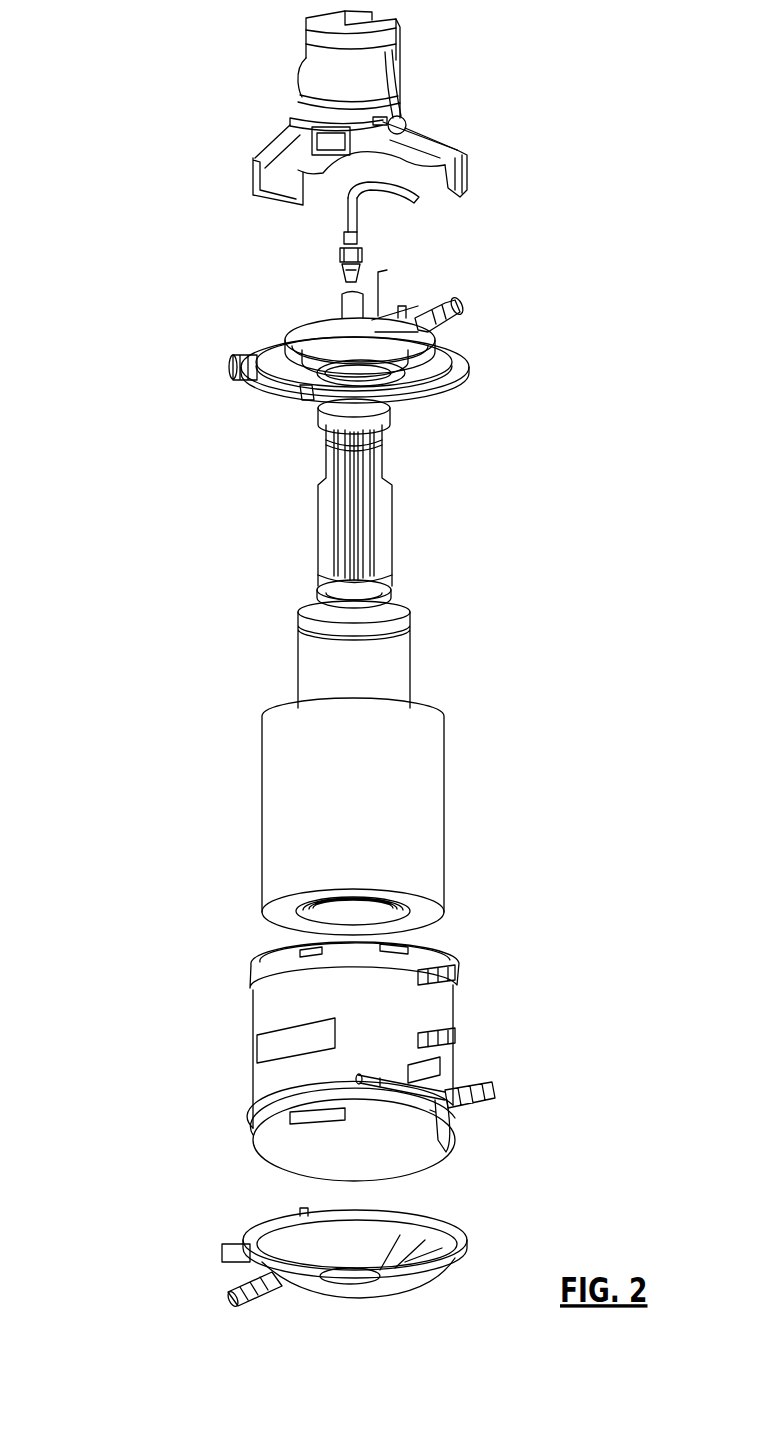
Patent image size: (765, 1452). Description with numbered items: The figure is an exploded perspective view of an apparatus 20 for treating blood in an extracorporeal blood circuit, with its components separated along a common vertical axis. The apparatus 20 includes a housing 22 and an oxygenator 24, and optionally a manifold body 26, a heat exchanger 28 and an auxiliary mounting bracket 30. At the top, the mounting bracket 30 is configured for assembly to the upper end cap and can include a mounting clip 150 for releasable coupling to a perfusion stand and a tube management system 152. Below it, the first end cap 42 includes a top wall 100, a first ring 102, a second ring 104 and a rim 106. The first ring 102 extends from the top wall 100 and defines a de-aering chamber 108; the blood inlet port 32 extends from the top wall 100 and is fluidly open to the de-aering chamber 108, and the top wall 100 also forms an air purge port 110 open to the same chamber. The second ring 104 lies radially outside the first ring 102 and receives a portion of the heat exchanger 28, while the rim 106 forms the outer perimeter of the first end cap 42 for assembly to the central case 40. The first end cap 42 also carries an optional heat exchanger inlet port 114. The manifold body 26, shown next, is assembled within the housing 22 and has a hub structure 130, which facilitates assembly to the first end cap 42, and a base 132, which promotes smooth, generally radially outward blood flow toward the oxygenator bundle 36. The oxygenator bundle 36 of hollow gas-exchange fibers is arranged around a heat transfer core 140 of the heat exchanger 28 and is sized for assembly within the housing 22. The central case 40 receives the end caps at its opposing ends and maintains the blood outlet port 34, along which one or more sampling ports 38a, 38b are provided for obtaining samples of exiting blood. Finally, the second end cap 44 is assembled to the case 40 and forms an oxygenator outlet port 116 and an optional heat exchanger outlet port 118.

The apparatus 20 is at (136, 205).
The housing 22 is at (558, 1061).
The oxygenator 24 is at (454, 799).
The manifold body 26 is at (410, 537).
The heat exchanger 28 is at (419, 668).
The auxiliary mounting bracket 30 is at (426, 68).
The blood inlet port 32 is at (440, 296).
The blood outlet port 34 is at (472, 1076).
The oxygenator bundle 36 is at (286, 803).
The sampling port 38a is at (450, 1147).
The sampling port 38b is at (492, 1107).
The central case 40 is at (246, 1054).
The first end cap 42 is at (312, 318).
The second end cap 44 is at (437, 1282).
The top wall 100 is at (350, 320).
The first ring 102 is at (306, 395).
The second ring 104 is at (297, 363).
The rim 106 is at (255, 360).
The de-aering chamber 108 is at (403, 392).
The air purge port 110 is at (386, 300).
The heat exchanger inlet port 114 is at (248, 380).
The oxygenator outlet port 116 is at (226, 1250).
The heat exchanger outlet port 118 is at (238, 1282).
The hub structure 130 is at (395, 411).
The base 132 is at (341, 532).
The heat transfer core 140 is at (314, 667).
The mounting clip 150 is at (312, 33).
The tube management system 152 is at (413, 140).